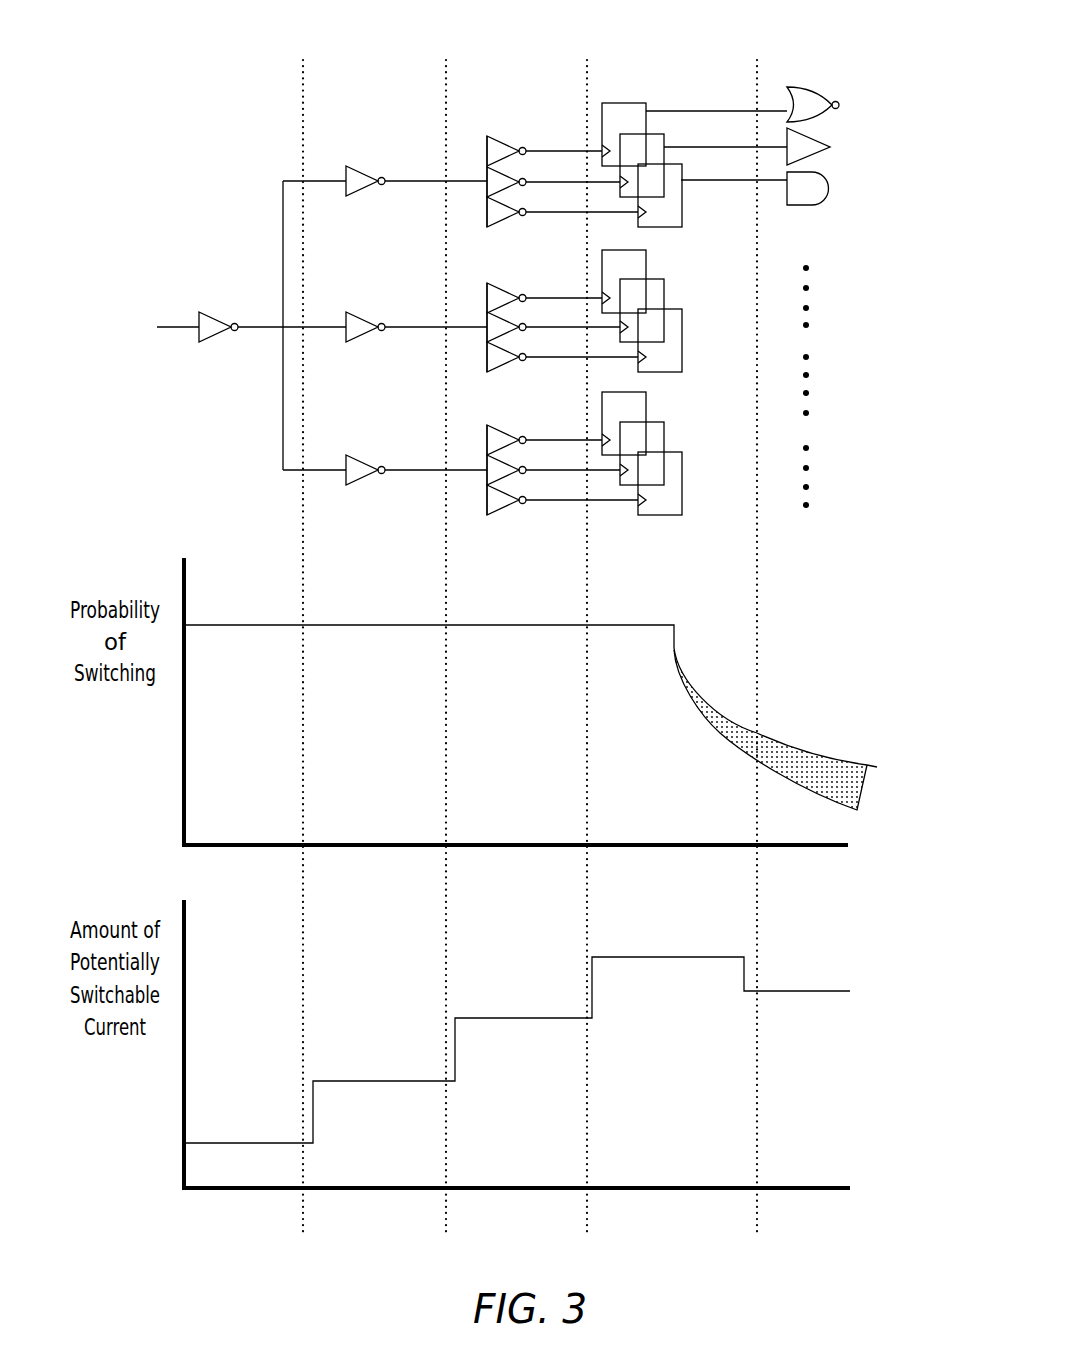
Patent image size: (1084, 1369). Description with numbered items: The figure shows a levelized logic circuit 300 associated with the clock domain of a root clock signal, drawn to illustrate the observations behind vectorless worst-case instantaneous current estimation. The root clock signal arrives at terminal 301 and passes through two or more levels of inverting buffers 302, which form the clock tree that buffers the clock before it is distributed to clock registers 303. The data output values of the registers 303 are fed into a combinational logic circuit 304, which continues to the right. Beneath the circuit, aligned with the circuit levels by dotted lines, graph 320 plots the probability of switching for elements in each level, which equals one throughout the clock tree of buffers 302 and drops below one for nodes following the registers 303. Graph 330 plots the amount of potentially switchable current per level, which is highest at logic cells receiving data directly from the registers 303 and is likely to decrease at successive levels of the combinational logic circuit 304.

The logic circuit 300 is at (393, 73).
The terminal 301 is at (163, 327).
The inverting buffers 302 is at (163, 527).
The clock registers 303 is at (732, 77).
The combinational logic circuit 304 is at (767, 537).
The graph of probability of switching 320 is at (655, 625).
The graph of expected current 330 is at (830, 991).